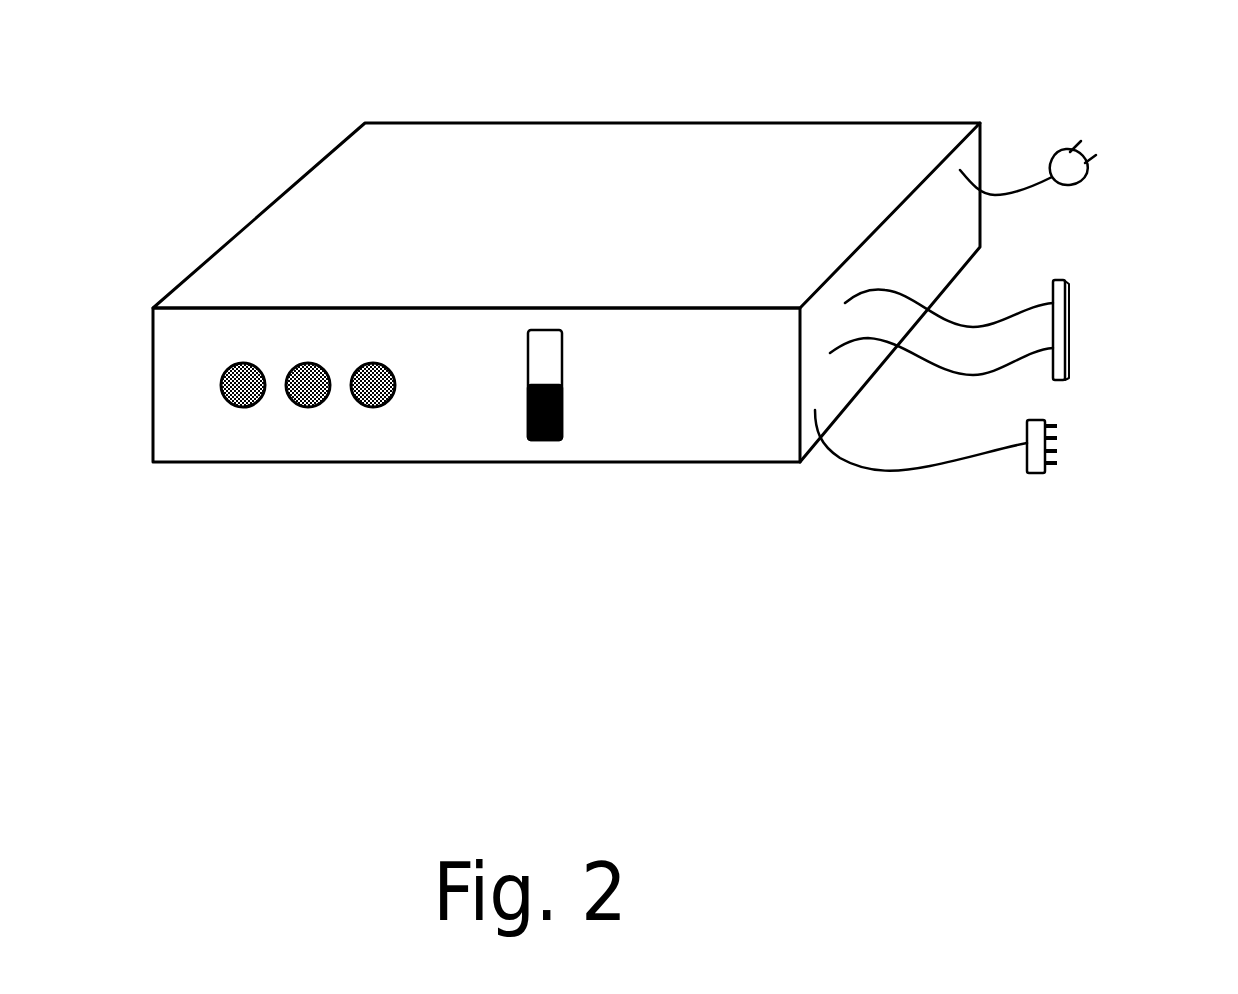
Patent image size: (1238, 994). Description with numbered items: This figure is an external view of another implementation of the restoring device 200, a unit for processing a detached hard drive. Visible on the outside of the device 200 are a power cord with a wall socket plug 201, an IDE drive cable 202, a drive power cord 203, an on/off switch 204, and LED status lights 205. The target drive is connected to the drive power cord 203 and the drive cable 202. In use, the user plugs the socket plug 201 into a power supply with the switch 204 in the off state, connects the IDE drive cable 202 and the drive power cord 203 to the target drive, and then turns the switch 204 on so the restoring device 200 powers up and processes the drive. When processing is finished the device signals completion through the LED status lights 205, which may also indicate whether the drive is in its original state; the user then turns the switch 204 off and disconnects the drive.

The media device housing 200 is at (280, 74).
The power cord with a wall socket 201 is at (1057, 143).
The IDE drive cable 202 is at (1070, 315).
The drive power cord 203 is at (1060, 445).
The on/off switch 204 is at (545, 440).
The LED status lights 205 is at (309, 428).